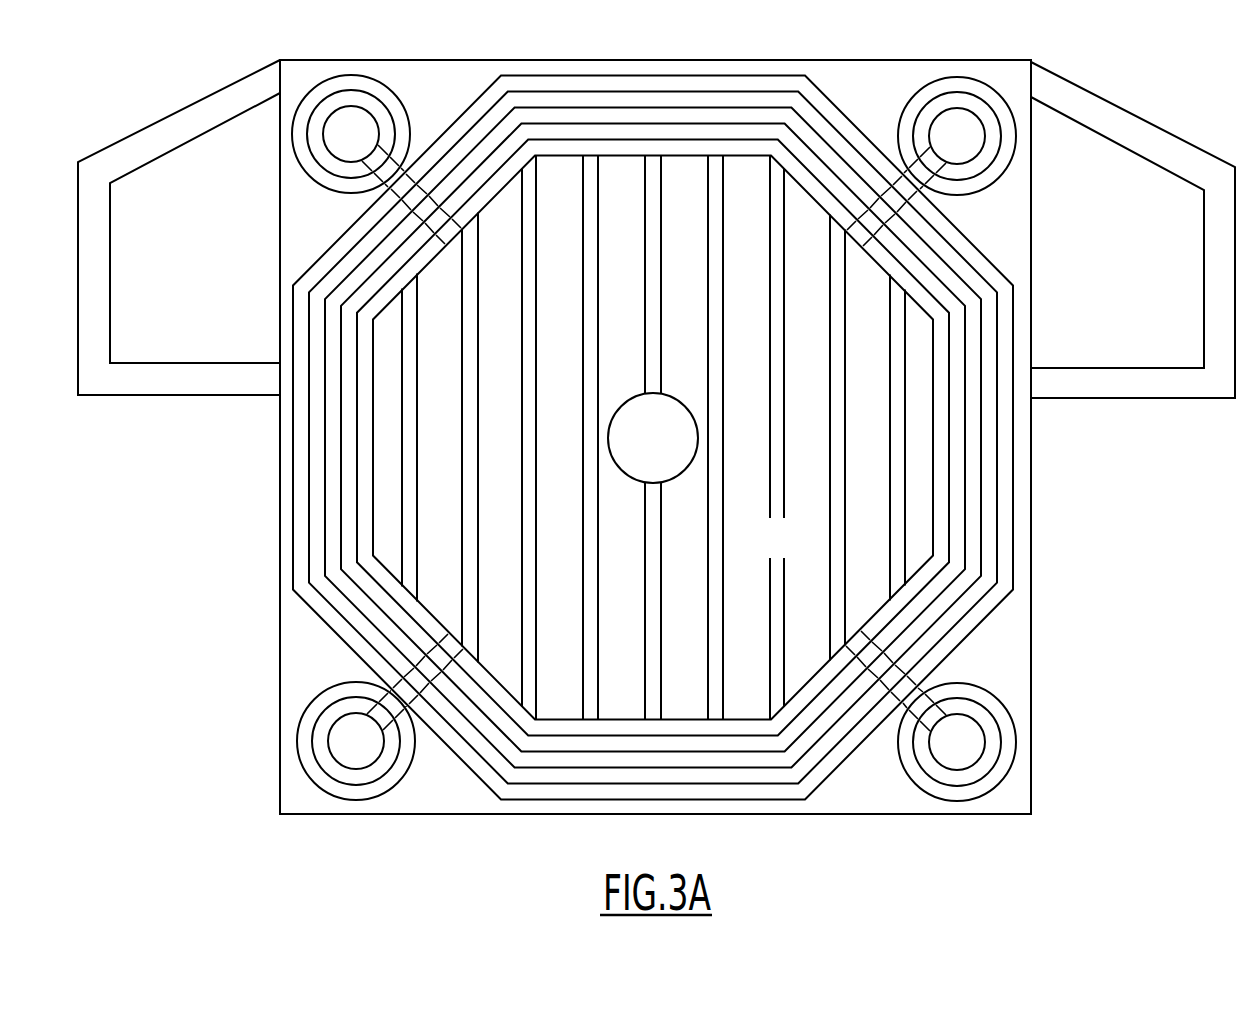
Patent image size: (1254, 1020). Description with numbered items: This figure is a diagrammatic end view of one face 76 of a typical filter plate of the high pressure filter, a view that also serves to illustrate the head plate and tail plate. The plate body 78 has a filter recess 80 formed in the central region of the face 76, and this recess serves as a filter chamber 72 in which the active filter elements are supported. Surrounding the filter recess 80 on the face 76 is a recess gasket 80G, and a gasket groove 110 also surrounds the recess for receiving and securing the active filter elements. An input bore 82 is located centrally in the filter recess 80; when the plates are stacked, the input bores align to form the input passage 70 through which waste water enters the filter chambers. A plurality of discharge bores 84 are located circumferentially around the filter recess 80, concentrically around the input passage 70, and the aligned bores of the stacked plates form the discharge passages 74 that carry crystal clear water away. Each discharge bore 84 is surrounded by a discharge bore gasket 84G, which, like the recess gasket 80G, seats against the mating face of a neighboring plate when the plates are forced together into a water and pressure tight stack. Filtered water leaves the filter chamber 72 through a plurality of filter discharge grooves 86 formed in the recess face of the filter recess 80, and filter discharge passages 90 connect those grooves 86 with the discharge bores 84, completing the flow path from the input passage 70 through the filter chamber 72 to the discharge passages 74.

The input passage 70 is at (637, 457).
The filter chamber 72 is at (760, 555).
The discharge passage 74 is at (350, 152).
The face 76 is at (238, 436).
The plate body 78 is at (1032, 282).
The filter recess 80 is at (793, 458).
The recess gasket 80G is at (1015, 535).
The input bore 82 is at (665, 393).
The discharge bore 84 is at (340, 123).
The discharge bore gasket 84G is at (300, 100).
The filter discharge groove 86 is at (578, 508).
The filter discharge passage 90 is at (410, 165).
The gasket groove 110 is at (651, 108).